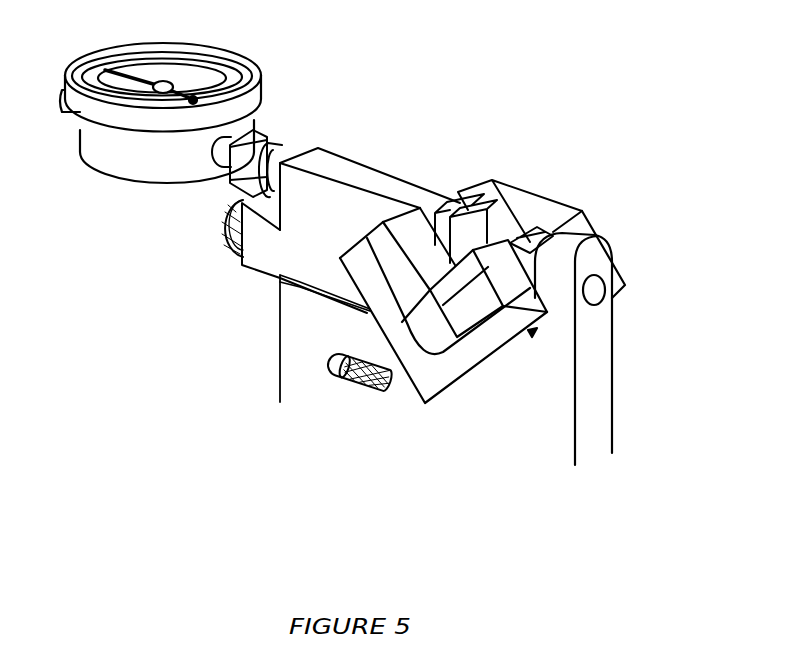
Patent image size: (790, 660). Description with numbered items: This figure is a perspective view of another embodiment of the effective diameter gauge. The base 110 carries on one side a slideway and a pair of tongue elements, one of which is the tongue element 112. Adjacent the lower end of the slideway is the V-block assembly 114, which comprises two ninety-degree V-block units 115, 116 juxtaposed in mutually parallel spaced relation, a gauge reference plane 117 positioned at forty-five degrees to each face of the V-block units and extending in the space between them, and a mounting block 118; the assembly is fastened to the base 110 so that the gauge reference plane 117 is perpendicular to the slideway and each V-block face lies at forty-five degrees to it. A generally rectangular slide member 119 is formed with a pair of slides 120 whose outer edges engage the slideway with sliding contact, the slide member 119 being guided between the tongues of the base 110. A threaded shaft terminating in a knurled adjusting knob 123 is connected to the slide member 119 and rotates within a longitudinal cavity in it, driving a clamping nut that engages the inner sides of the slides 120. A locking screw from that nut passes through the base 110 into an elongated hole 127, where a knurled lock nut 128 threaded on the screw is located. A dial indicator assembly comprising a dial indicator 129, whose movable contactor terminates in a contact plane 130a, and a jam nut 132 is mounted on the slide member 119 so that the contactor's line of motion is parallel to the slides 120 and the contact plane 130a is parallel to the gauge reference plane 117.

The base 110 is at (602, 250).
The tongue element 112 is at (298, 284).
The V-block assembly 114 is at (427, 397).
The V-block unit 115 is at (440, 210).
The V-block unit 116 is at (507, 213).
The gauge reference plane 117 is at (533, 237).
The mounting block 118 is at (463, 387).
The slide member 119 is at (330, 148).
The slides 120 is at (250, 273).
The knurled adjusting knob 123 is at (225, 244).
The elongated hole 127 is at (340, 380).
The knurled lock nut 128 is at (363, 387).
The dial indicator 129 is at (198, 43).
The contact plane 130a is at (469, 207).
The jam nut 132 is at (268, 132).